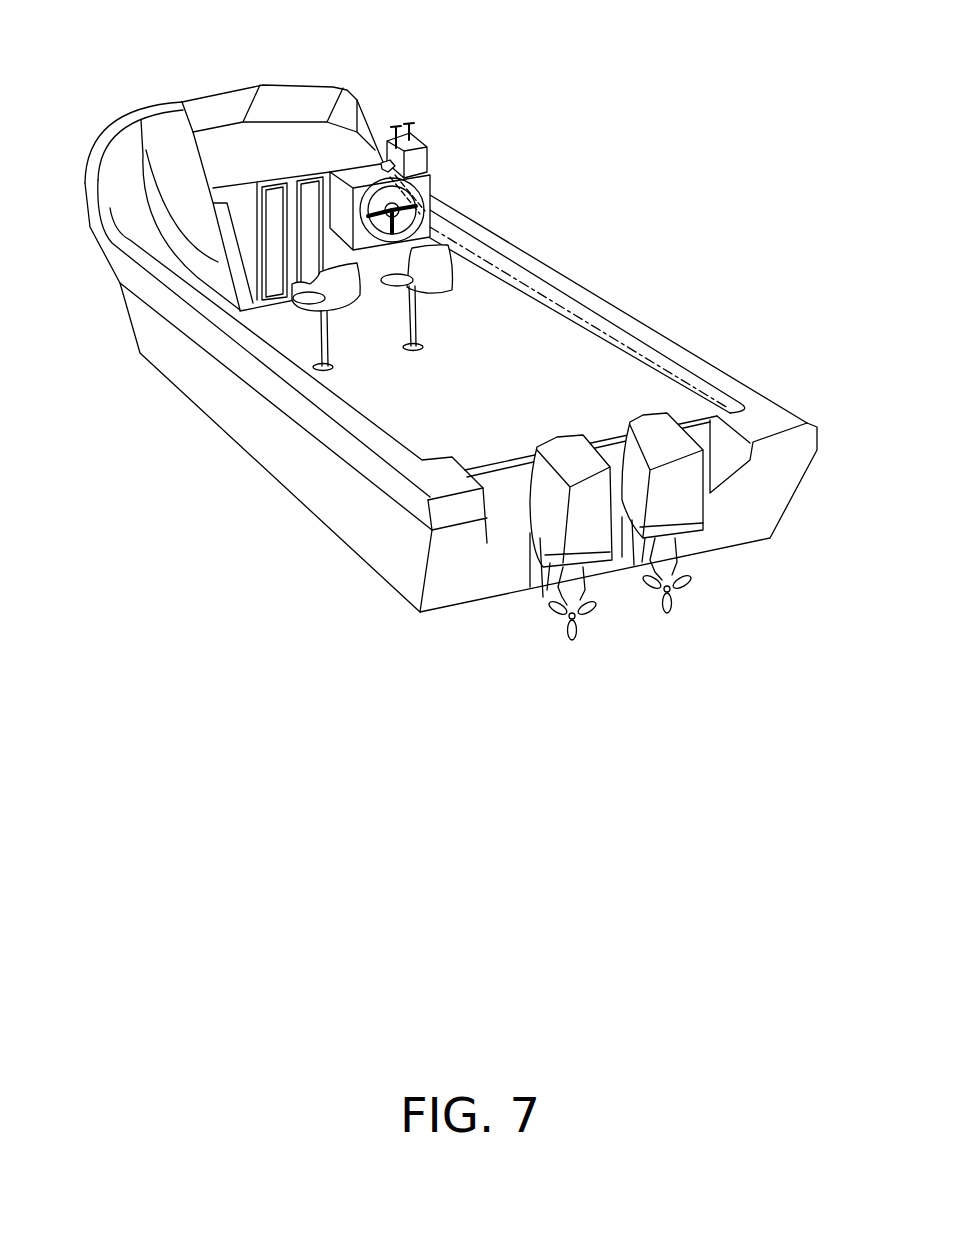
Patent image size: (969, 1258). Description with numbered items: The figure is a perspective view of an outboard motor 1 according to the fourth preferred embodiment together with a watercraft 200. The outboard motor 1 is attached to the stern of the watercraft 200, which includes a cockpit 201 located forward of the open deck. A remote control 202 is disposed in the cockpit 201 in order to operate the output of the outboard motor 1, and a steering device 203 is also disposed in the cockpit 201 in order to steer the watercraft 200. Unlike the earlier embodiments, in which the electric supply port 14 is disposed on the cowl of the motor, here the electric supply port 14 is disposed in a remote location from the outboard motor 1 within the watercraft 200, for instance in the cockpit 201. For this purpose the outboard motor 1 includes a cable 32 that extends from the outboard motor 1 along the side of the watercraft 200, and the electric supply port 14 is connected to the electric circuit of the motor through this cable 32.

The outboard motor 1 is at (680, 528).
The electric supply port 14 is at (388, 163).
The cable 32 is at (675, 370).
The watercraft 200 is at (634, 240).
The cockpit 201 is at (462, 268).
The remote control 202 is at (430, 132).
The steering device 203 is at (432, 192).